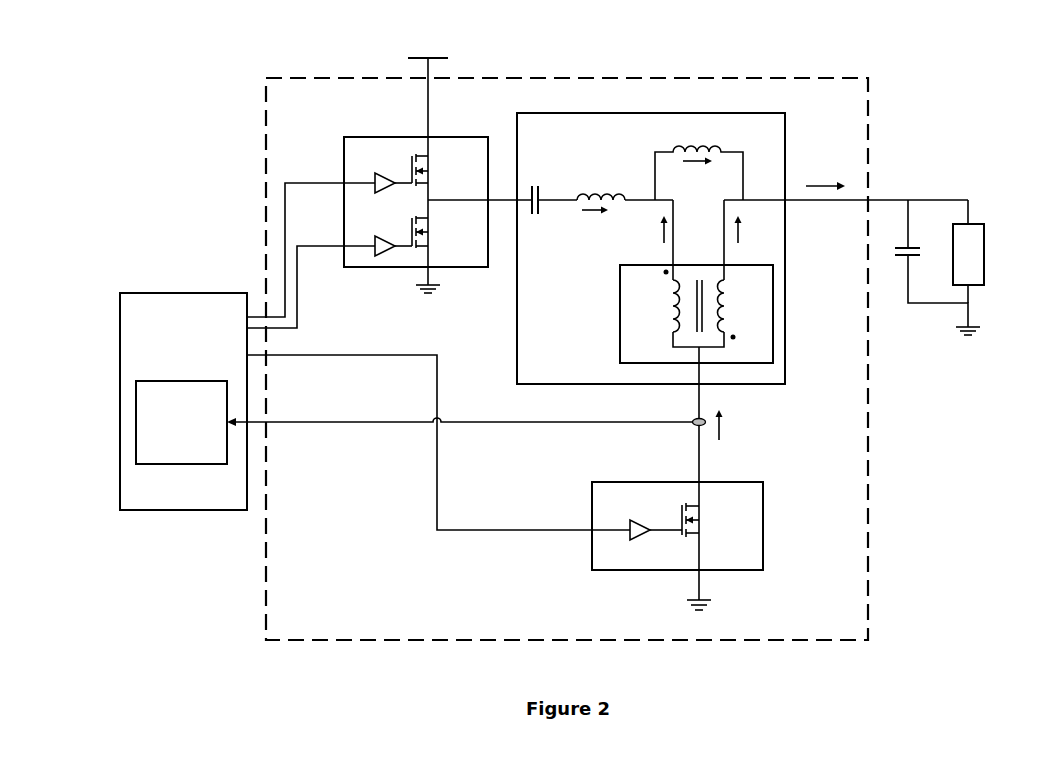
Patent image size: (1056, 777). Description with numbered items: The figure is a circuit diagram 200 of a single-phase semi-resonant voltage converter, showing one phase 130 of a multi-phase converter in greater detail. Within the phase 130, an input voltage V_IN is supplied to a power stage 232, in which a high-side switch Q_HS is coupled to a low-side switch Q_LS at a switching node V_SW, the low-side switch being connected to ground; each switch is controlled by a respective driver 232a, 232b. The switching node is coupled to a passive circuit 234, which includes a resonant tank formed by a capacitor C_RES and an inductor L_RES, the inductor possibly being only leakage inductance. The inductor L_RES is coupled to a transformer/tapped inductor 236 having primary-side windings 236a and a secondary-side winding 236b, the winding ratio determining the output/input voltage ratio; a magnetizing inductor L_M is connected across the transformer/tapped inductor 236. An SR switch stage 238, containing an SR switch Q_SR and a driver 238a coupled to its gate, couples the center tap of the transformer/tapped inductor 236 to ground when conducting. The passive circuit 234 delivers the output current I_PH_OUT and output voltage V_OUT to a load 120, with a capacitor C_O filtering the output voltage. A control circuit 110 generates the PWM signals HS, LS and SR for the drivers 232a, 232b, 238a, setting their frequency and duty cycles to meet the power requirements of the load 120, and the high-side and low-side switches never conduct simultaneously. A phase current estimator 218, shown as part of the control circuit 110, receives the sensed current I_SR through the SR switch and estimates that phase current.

The circuit diagram 200 is at (173, 133).
The phase 130 is at (597, 338).
The control circuit 110 is at (183, 391).
The phase current estimator 218 is at (181, 412).
The power stage 232 is at (416, 190).
The driver 232a is at (386, 172).
The driver 232b is at (386, 235).
The passive circuit 234 is at (742, 237).
The transformer/tapped inductor 236 is at (696, 303).
The primary-side windings 236a is at (657, 306).
The secondary-side winding 236b is at (741, 306).
The SR switch stage 238 is at (677, 516).
The driver 238a is at (651, 520).
The load 120 is at (978, 251).